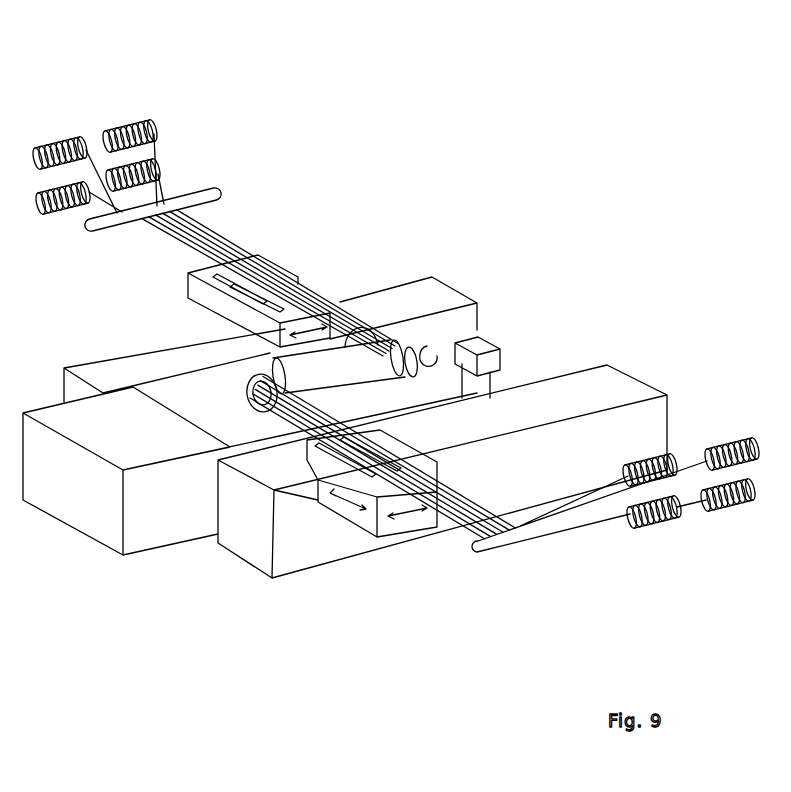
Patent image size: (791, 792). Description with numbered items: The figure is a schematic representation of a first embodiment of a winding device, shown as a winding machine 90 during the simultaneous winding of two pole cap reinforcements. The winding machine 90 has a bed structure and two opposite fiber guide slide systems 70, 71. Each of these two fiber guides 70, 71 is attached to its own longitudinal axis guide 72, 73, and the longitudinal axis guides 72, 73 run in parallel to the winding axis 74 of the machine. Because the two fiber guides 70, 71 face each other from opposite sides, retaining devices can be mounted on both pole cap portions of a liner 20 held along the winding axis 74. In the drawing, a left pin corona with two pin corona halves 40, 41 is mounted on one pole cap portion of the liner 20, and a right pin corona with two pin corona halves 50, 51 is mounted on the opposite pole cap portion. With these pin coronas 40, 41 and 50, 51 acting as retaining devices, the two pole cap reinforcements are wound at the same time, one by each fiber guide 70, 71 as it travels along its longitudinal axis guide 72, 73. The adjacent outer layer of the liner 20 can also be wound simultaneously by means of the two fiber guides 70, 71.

The winding machine 90 is at (487, 126).
The fiber guide slide system 70 is at (268, 258).
The fiber guide slide system 71 is at (397, 447).
The longitudinal axis guide 72 is at (115, 360).
The longitudinal axis guide 73 is at (581, 384).
The winding axis 74 is at (200, 418).
The liner 20 is at (348, 394).
The pin corona half 40 is at (243, 380).
The pin corona half 41 is at (262, 393).
The pin corona half 50 is at (389, 345).
The pin corona half 51 is at (422, 362).